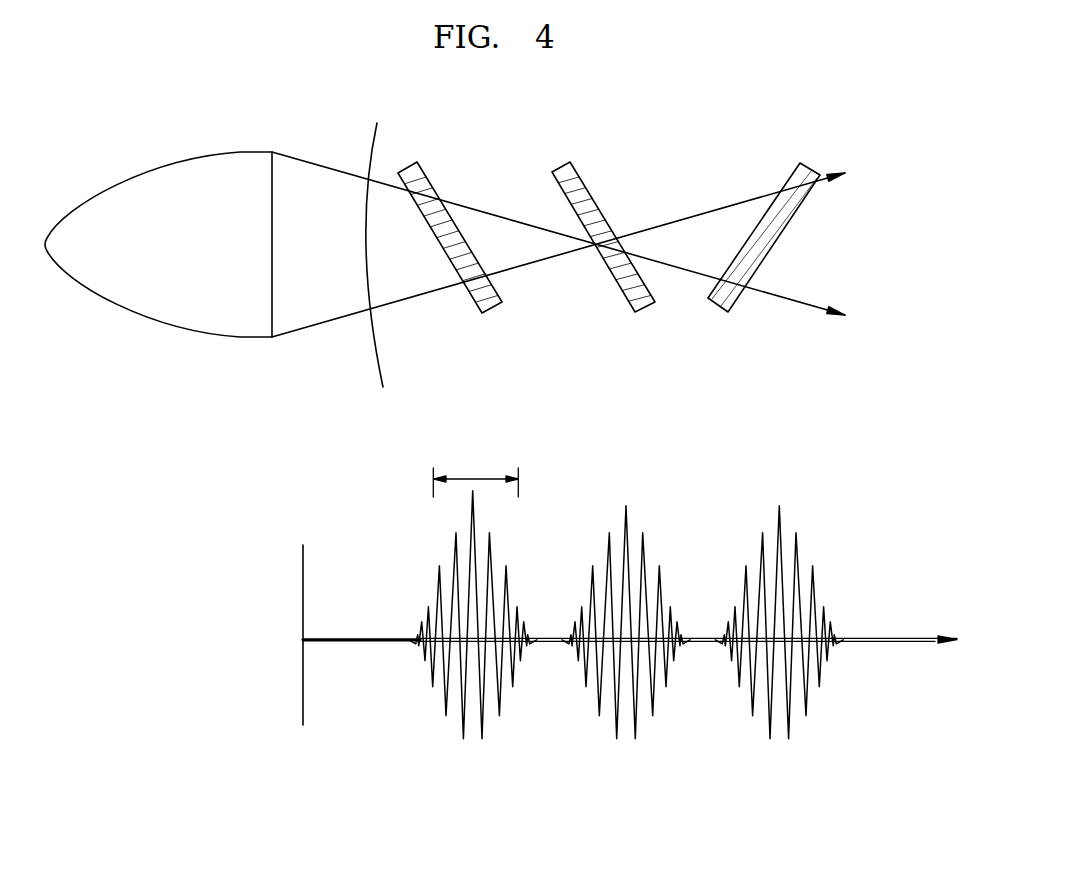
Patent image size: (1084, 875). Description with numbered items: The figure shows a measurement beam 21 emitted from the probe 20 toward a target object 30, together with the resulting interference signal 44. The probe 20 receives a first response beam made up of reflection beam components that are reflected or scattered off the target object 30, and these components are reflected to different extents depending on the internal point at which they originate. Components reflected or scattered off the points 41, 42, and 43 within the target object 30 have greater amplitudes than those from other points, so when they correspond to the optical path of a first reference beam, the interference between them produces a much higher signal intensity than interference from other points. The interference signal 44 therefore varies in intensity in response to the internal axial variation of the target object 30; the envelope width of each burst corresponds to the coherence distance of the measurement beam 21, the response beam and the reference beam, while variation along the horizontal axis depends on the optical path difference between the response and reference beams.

The probe 20 is at (135, 203).
The measurement beam 21 is at (297, 158).
The target object 30 is at (376, 142).
The point within the target object 41 is at (428, 178).
The point within the target object 42 is at (583, 182).
The point within the target object 43 is at (792, 172).
The interference signal 44 is at (357, 641).